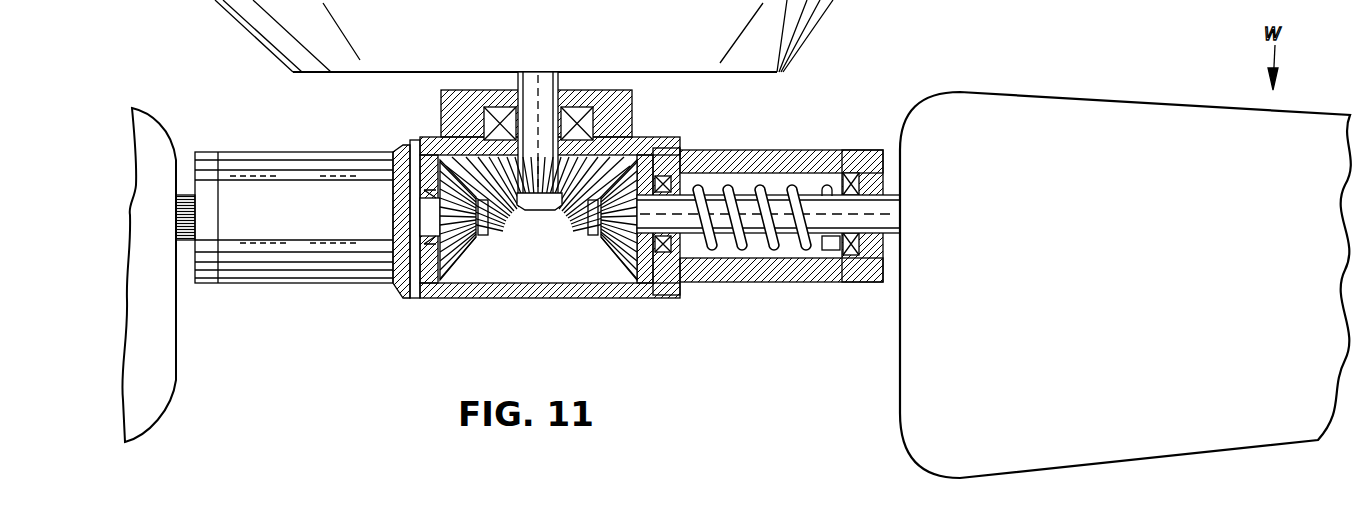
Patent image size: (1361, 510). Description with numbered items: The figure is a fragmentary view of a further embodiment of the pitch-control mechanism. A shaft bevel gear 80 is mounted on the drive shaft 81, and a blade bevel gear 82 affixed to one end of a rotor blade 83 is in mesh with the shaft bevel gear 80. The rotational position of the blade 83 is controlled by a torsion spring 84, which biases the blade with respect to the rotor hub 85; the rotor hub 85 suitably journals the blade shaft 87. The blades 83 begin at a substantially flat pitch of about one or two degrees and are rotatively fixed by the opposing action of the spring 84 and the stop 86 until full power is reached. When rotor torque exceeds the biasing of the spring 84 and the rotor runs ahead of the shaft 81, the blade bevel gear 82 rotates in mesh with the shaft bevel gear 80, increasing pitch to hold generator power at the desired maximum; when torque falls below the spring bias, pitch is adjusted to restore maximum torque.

The shaft bevel gear 80 is at (510, 195).
The drive shaft 81 is at (538, 95).
The blade bevel gear 82 is at (453, 272).
The rotor blade 83 is at (1068, 118).
The torsion spring 84 is at (772, 190).
The rotor hub 85 is at (325, 283).
The stop 86 is at (832, 252).
The blade shaft 87 is at (186, 242).